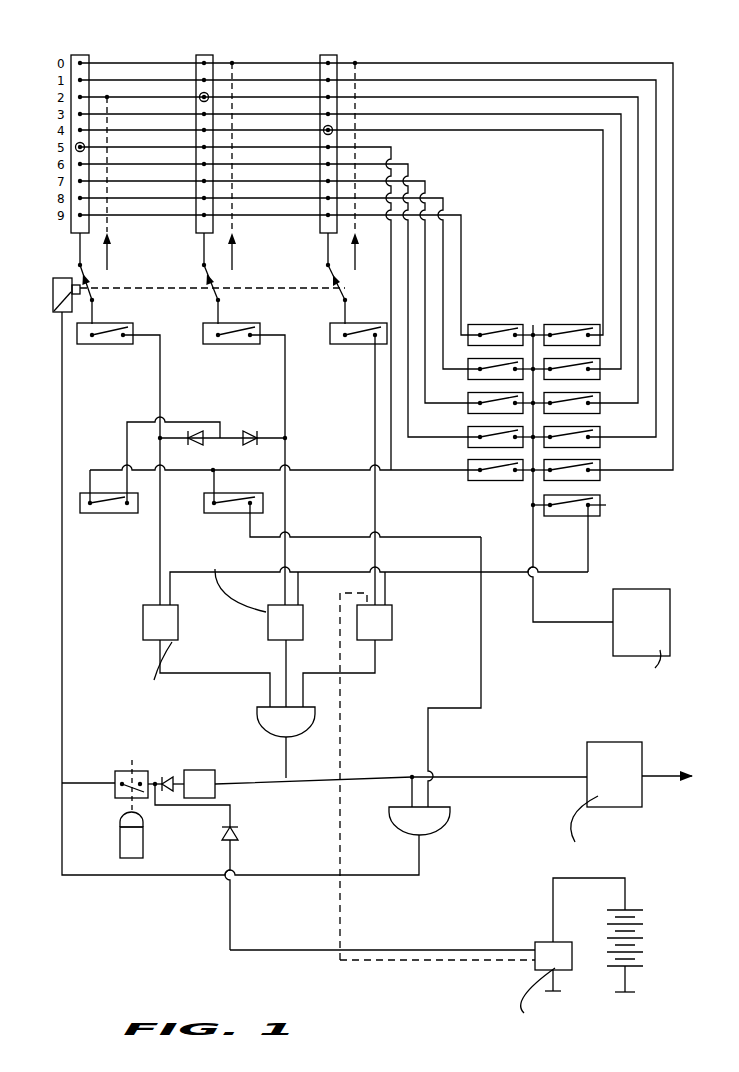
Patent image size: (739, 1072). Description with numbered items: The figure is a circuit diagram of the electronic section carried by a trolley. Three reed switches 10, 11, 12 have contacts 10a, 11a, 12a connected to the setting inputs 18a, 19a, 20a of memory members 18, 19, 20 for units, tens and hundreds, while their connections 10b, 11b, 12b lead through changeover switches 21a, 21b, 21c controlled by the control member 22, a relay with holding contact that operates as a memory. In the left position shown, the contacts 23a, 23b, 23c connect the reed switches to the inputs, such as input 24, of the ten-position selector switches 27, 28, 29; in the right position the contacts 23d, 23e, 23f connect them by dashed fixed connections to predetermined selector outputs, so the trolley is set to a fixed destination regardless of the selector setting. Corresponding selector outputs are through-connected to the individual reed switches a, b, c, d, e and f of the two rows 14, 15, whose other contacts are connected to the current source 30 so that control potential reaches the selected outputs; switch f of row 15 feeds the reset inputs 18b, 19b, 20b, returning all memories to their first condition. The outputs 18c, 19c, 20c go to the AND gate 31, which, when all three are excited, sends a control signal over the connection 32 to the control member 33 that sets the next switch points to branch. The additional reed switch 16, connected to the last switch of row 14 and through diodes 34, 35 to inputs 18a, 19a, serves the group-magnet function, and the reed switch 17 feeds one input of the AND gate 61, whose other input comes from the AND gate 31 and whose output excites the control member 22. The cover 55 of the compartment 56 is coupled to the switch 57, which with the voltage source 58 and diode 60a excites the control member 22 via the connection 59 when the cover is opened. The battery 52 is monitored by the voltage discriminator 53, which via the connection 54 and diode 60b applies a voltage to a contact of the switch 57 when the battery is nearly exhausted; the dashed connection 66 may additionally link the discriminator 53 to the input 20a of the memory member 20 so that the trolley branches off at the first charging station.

The selector switch 27 is at (83, 55).
The selector switch 28 is at (205, 55).
The selector switch 29 is at (329, 55).
The input of selector switch 24 is at (72, 233).
The left hand contact 23a is at (82, 272).
The left hand contact 23b is at (206, 276).
The left hand contact 23c is at (332, 276).
The right hand contact 23d is at (107, 270).
The right hand contact 23e is at (232, 270).
The right hand contact 23f is at (355, 270).
The changeover switch 21a is at (96, 301).
The changeover switch 21b is at (222, 301).
The changeover switch 21c is at (341, 301).
The control member 22 is at (53, 290).
The reed switch 10 is at (103, 344).
The reed switch contact 10a is at (123, 340).
The reed switch connection 10b is at (80, 345).
The reed switch 11 is at (233, 344).
The reed switch contact 11a is at (251, 340).
The reed switch connection 11b is at (215, 344).
The reed switch 12 is at (366, 344).
The reed switch contact 12a is at (379, 328).
The reed switch connection 12b is at (345, 345).
The diode 34 is at (207, 430).
The diode 35 is at (250, 432).
The reed switch 16 is at (90, 514).
The reed switch 17 is at (213, 514).
The row of reed switches 14 is at (498, 316).
The row of reed switches 15 is at (565, 316).
The reed switch a is at (508, 327).
The reed switch b is at (527, 328).
The reed switch c is at (472, 408).
The reed switch d is at (502, 444).
The reed switch e is at (505, 481).
The reed switch f is at (606, 505).
The current source 30 is at (641, 600).
The memory member 18 is at (150, 622).
The setting input 18a is at (158, 603).
The reset input 18b is at (171, 578).
The output 18c is at (160, 645).
The memory member 19 is at (275, 622).
The setting input 19a is at (283, 603).
The reset input 19b is at (299, 600).
The output 19c is at (282, 645).
The memory member 20 is at (389, 622).
The setting input 20a is at (365, 598).
The reset input 20b is at (387, 603).
The output 20c is at (378, 645).
The AND gate 31 is at (275, 720).
The connection 32 is at (504, 777).
The control member 33 is at (612, 748).
The connection 59 is at (62, 702).
The switch 57 is at (128, 771).
The voltage source 58 is at (200, 770).
The diode 60a is at (170, 777).
The diode 60b is at (238, 832).
The cover 55 is at (143, 820).
The compartment 56 is at (143, 848).
The connection 66 is at (340, 846).
The AND gate 61 is at (445, 824).
The connection 54 is at (455, 950).
The battery voltage discriminator 53 is at (553, 966).
The battery 52 is at (643, 938).